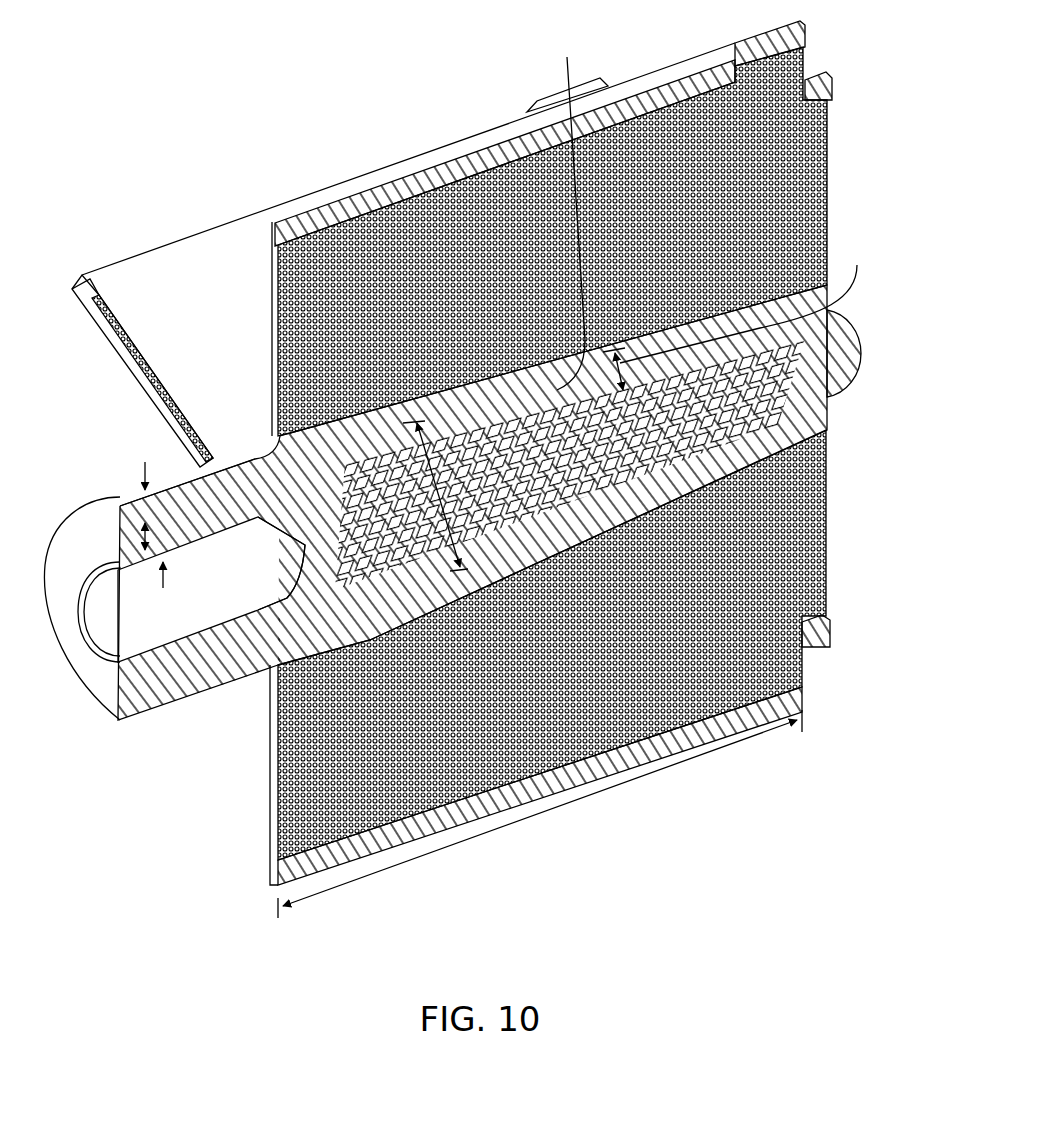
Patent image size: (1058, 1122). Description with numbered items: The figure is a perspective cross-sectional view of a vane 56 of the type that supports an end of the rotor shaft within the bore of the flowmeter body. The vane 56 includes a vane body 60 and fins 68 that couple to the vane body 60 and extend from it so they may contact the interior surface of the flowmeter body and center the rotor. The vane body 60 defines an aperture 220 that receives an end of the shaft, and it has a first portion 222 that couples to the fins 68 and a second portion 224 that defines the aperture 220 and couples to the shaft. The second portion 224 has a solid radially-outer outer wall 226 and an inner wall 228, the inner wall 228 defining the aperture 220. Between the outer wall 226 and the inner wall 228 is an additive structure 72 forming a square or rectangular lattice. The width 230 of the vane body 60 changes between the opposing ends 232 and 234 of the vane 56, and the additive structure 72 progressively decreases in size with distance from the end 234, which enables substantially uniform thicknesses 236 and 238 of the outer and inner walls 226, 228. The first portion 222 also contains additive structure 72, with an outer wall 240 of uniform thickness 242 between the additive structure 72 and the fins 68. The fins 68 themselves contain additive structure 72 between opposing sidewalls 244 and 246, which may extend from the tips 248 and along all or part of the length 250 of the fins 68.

The vane 56 is at (476, 501).
The vane body 60 is at (103, 713).
The fins 68 is at (170, 258).
The additive structure 72 is at (881, 302).
The aperture 220 is at (165, 578).
The first portion 222 is at (472, 483).
The second portion 224 is at (92, 445).
The outer wall 226 is at (164, 514).
The inner wall 228 is at (207, 530).
The width 230 is at (525, 344).
The end 232 is at (845, 317).
The end 234 is at (77, 660).
The thickness 236 is at (145, 470).
The thickness 238 is at (163, 582).
The outer wall 240 is at (567, 207).
The thickness 242 is at (857, 265).
The sidewall 244 is at (120, 297).
The sidewall 246 is at (274, 268).
The tips 248 is at (312, 190).
The length 250 is at (452, 848).